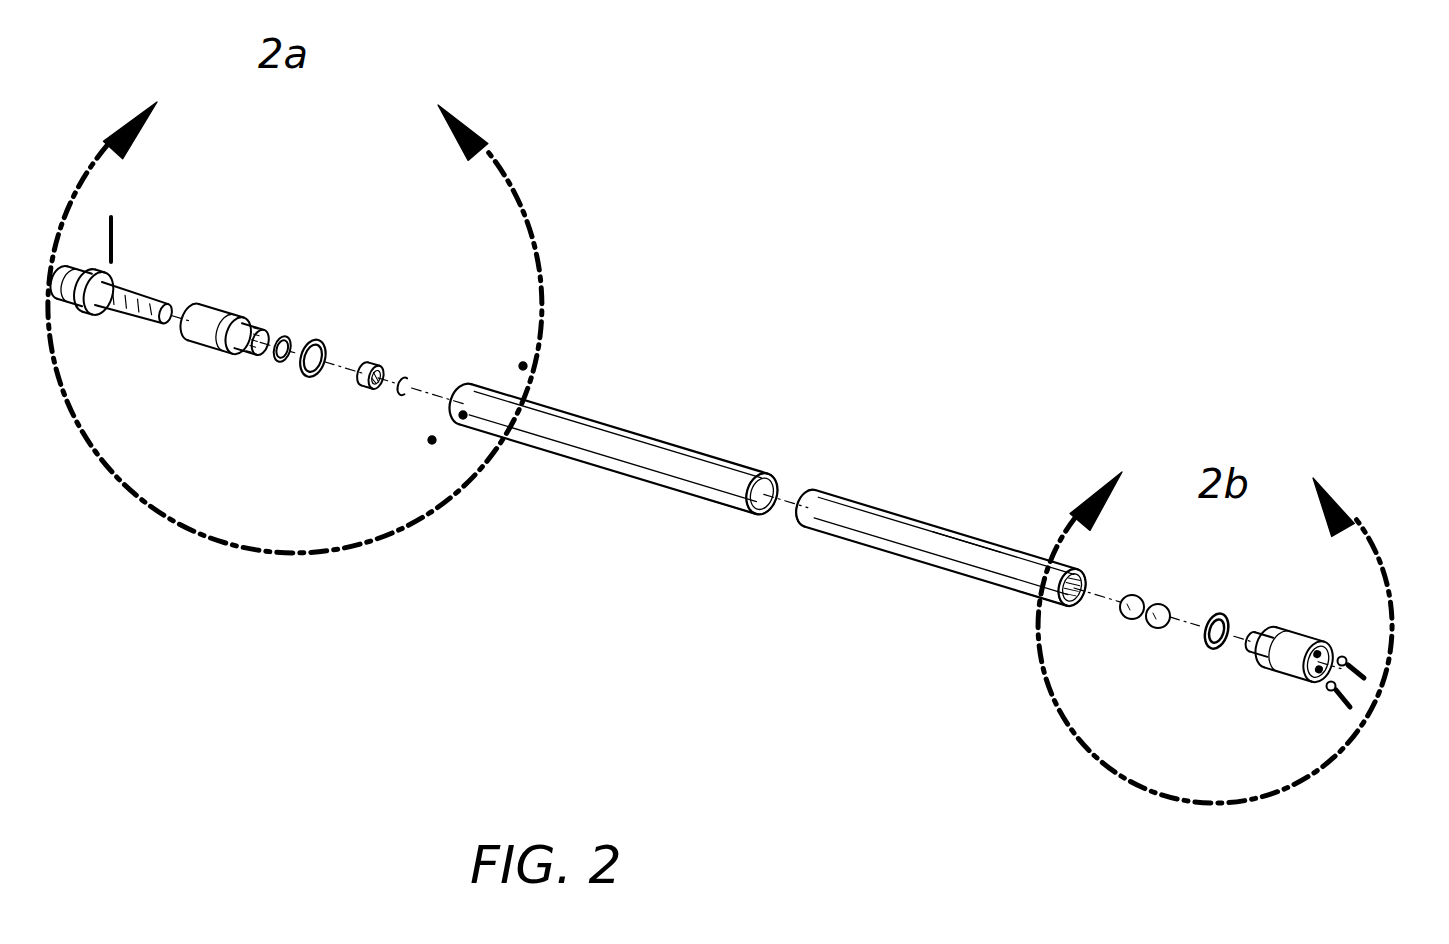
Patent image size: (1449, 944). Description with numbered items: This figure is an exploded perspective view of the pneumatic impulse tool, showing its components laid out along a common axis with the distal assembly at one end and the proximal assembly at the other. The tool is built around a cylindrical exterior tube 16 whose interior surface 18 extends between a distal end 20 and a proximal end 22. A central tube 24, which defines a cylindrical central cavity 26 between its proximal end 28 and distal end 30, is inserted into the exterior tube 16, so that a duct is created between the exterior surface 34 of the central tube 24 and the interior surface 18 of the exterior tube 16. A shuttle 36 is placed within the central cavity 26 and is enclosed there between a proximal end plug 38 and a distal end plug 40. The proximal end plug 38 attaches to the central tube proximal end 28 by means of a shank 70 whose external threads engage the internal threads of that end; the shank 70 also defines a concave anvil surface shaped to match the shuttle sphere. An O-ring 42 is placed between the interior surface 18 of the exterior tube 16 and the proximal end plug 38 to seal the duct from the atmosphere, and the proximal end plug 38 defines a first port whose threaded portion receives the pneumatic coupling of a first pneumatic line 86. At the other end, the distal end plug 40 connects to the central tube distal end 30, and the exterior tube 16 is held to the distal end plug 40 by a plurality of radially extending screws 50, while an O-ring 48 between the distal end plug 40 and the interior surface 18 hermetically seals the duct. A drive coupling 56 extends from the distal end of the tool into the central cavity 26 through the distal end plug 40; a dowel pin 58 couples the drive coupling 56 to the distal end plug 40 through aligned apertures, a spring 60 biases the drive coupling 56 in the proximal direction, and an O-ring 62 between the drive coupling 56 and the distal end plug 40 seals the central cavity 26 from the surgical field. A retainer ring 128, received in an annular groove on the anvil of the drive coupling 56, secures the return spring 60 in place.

The exterior tube 16 is at (620, 425).
The interior surface 18 is at (772, 470).
The distal end 20 is at (457, 405).
The proximal end 22 is at (733, 492).
The central tube 24 is at (915, 520).
The central cavity 26 is at (1083, 585).
The proximal end 28 is at (1043, 607).
The distal end 30 is at (838, 518).
The exterior surface 34 is at (965, 548).
The shuttle 36 is at (1162, 606).
The proximal end plug 38 is at (1288, 636).
The distal end plug 40 is at (222, 300).
The O-ring 42 is at (1237, 608).
The O-ring 48 is at (328, 342).
The screws 50 is at (432, 440).
The drive coupling 56 is at (98, 303).
The dowel pin 58 is at (112, 236).
The spring 60 is at (372, 360).
The O-ring 62 is at (288, 328).
The shank 70 is at (1360, 662).
The first pneumatic line 86 is at (1337, 702).
The retainer ring 128 is at (410, 373).